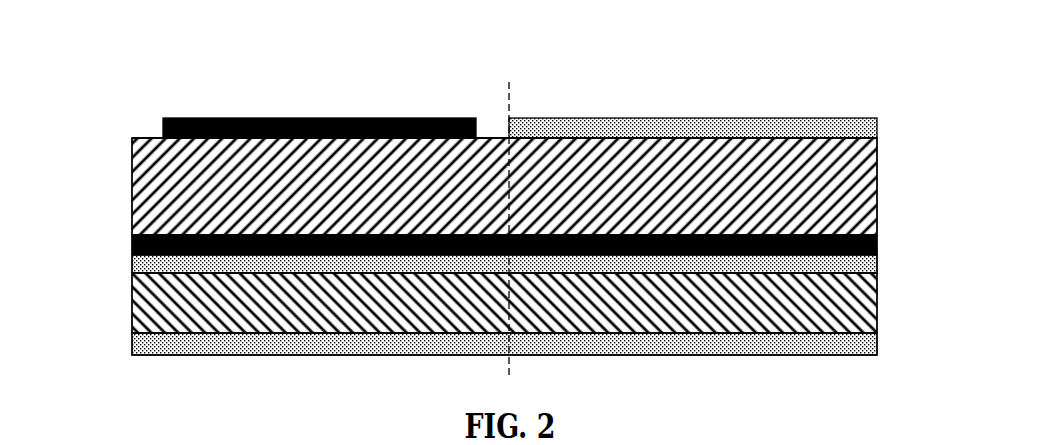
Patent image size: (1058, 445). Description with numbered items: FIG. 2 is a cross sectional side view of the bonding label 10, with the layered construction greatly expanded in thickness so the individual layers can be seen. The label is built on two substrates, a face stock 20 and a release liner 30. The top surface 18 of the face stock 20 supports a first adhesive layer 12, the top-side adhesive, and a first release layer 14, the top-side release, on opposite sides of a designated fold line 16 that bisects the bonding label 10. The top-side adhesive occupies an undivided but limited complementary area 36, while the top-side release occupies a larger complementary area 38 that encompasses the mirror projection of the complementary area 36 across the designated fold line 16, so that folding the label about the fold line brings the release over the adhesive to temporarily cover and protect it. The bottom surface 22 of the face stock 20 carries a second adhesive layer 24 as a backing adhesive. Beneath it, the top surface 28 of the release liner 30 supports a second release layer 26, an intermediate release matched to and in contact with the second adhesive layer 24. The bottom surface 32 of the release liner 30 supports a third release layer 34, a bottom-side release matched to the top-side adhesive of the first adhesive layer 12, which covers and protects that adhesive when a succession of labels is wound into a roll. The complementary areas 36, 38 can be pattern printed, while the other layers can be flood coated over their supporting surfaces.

The bonding label 10 is at (547, 66).
The first adhesive layer 12 is at (163, 132).
The first release layer 14 is at (877, 128).
The designated fold line 16 is at (509, 112).
The top surface 18 is at (132, 138).
The face stock 20 is at (877, 185).
The bottom surface 22 is at (132, 237).
The second adhesive layer 24 is at (877, 242).
The second release layer 26 is at (877, 265).
The top surface 28 is at (132, 275).
The release liner 30 is at (877, 307).
The bottom surface 32 is at (132, 335).
The third release layer 34 is at (877, 345).
The complementary area 36 is at (350, 106).
The complementary area 38 is at (729, 106).